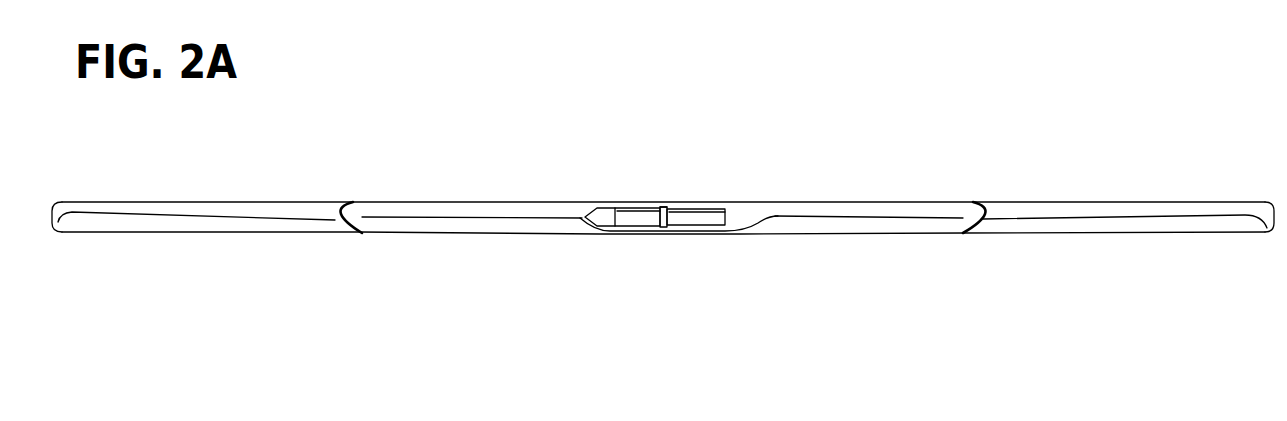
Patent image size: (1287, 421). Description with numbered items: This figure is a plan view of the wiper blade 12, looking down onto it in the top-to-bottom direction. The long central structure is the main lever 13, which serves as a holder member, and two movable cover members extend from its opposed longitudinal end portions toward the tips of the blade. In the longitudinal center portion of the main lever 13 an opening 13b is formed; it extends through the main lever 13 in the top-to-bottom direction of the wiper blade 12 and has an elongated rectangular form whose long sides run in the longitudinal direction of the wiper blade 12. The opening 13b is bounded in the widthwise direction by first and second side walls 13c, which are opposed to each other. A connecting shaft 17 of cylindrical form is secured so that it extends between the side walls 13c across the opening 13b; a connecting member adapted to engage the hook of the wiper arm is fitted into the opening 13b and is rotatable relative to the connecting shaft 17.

The wiper blade 12 is at (884, 168).
The main lever 13 is at (826, 202).
The opening 13b is at (686, 226).
The side walls 13c is at (663, 208).
The connecting shaft 17 is at (661, 220).